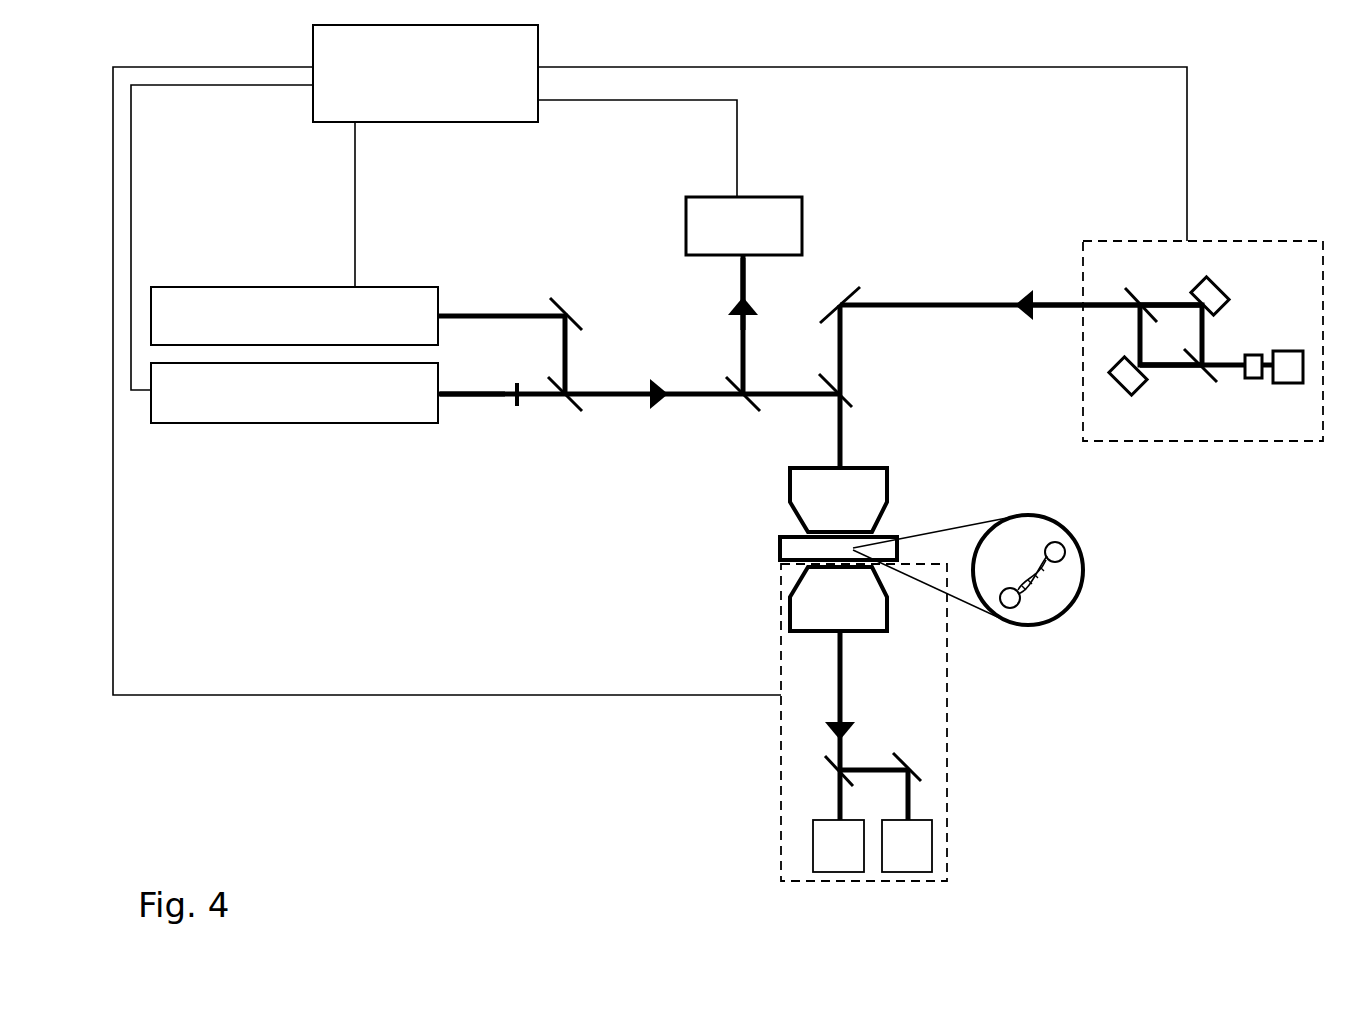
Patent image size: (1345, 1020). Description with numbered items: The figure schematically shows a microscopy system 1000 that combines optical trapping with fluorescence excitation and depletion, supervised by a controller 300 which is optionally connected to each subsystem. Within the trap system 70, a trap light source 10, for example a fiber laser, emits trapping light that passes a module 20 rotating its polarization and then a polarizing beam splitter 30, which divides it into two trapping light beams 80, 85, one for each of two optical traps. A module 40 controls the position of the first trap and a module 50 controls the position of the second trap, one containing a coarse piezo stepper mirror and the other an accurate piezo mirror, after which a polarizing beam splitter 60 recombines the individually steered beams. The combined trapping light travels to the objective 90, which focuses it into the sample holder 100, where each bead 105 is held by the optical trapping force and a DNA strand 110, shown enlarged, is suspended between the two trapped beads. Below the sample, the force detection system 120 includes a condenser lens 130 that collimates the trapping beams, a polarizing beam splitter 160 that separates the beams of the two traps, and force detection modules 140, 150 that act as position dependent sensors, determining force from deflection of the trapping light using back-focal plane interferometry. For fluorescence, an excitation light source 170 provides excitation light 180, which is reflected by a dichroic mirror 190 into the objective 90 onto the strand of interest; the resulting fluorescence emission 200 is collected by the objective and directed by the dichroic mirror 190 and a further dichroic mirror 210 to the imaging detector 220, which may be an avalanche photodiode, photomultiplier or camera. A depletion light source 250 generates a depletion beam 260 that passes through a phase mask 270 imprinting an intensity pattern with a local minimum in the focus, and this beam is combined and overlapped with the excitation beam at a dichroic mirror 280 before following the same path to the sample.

The microscopy system 1000 is at (1189, 103).
The controller 300 is at (425, 73).
The excitation light source 170 is at (294, 316).
The depletion light source 250 is at (294, 393).
The excitation light 180 is at (502, 315).
The depletion beam 260 is at (475, 402).
The phase mask 270 is at (517, 408).
The dichroic mirror 280 is at (571, 408).
The dichroic mirror 210 is at (758, 408).
The imaging detector 220 is at (744, 226).
The fluorescence emission 200 is at (746, 258).
The dichroic mirror 190 is at (848, 400).
The trap system 70 is at (1083, 268).
The polarizing beam splitter 60 is at (1130, 294).
The second trapping light beam 85 is at (1172, 296).
The module for controlling the position of the second trap 50 is at (1224, 291).
The module for controlling the position of the first trap 40 is at (1118, 388).
The first trapping light beam 80 is at (1168, 368).
The polarizing beam splitter 30 is at (1206, 382).
The polarization rotating module 20 is at (1252, 380).
The trap light source 10 is at (1289, 350).
The objective 90 is at (887, 488).
The sample holder 100 is at (781, 548).
The condenser lens 130 is at (887, 610).
The force detection system 120 is at (781, 660).
The bead 105 is at (1065, 556).
The DNA strand 110 is at (1043, 590).
The polarizing beam splitter 160 is at (822, 773).
The force detection module 140 is at (818, 857).
The force detection module 150 is at (895, 864).